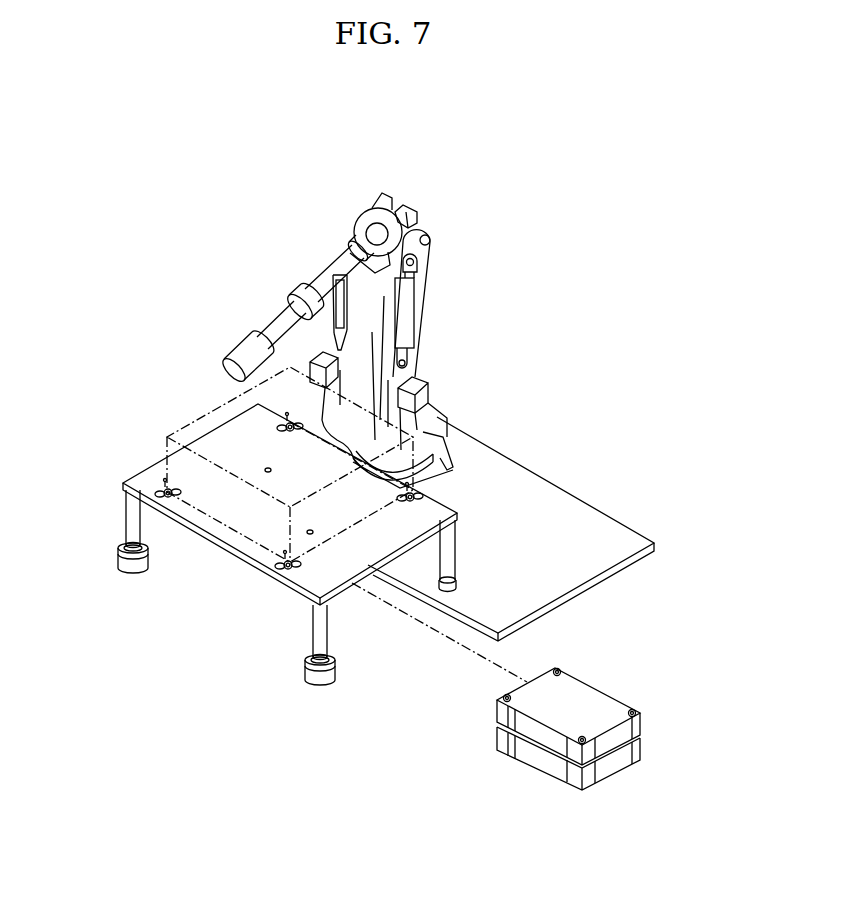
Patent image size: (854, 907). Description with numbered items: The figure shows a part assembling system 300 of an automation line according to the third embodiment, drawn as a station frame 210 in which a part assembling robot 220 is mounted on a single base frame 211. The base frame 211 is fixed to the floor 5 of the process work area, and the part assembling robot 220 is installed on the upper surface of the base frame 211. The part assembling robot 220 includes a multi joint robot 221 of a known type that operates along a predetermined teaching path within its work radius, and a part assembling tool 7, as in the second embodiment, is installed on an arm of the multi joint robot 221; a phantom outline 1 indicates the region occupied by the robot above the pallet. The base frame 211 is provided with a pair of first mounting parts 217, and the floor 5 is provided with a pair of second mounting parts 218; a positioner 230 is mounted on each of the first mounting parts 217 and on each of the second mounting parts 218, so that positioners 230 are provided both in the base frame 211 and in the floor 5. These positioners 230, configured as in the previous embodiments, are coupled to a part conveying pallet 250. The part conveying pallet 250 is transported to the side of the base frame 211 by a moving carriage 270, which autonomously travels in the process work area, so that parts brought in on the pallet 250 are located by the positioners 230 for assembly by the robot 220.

The part assembling system 300 is at (189, 235).
The robot installation region 1 is at (188, 418).
The part assembling tool 7 is at (245, 348).
The floor 5 is at (201, 599).
The part assembling robot 220 is at (432, 366).
The multi joint robot 221 is at (422, 287).
The part conveying pallet 250 is at (453, 509).
The positioner 230 is at (122, 546).
The second mounting part 218 is at (118, 566).
The first mounting part 217 is at (458, 587).
The station frame 210 is at (585, 488).
The base frame 211 is at (622, 545).
The moving carriage 270 is at (612, 690).